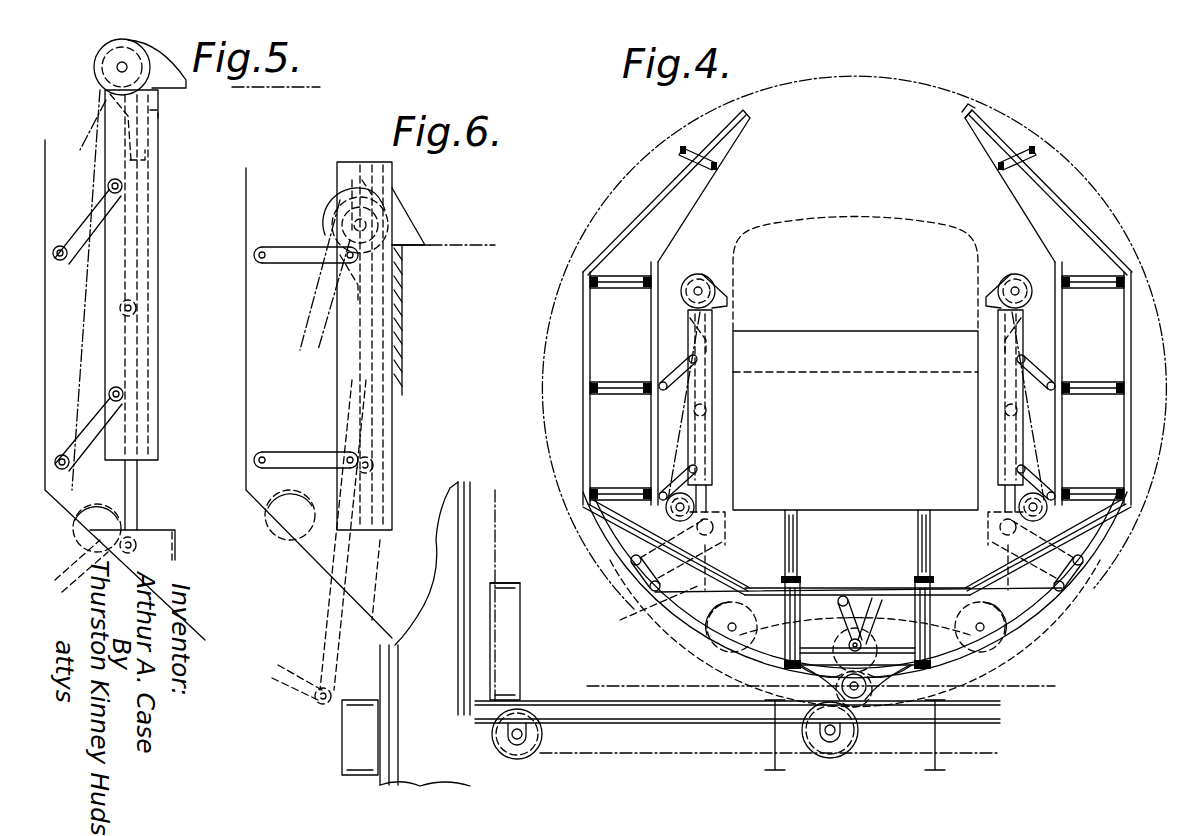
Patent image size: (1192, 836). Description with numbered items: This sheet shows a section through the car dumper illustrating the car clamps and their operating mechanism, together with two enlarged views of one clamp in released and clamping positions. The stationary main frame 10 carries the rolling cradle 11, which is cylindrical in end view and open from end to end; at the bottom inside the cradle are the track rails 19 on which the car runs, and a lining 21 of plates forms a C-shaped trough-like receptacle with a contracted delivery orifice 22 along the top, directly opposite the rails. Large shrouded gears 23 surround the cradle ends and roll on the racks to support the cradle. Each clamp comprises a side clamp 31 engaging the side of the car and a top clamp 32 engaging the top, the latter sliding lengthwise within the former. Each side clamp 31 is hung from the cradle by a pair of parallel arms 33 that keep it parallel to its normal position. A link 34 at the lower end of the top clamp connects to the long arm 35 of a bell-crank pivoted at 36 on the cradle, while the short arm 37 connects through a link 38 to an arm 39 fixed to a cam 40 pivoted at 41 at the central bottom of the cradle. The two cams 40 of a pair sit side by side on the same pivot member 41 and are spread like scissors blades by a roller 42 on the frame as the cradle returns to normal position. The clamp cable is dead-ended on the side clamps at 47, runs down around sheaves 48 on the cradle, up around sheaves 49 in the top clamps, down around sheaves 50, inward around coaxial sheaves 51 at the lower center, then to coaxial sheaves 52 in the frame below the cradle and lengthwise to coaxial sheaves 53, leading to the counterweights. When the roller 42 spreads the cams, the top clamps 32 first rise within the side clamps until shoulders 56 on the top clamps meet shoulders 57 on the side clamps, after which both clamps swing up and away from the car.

In FIG. 4, the main frame 10 is at (455, 540).
In FIG. 4, the cradle 11 is at (1108, 240).
In FIG. 4, the track rails 19 is at (805, 585).
In FIG. 4, the lining 21 is at (660, 284).
In FIG. 4, the contracted delivery orifice 22 is at (962, 118).
In FIG. 4, the shrouded gears 23 is at (1103, 573).
In FIG. 4, the side clamp 31 is at (718, 378).
In FIG. 5, the top clamp 32 is at (172, 91).
In FIG. 4, the top clamp 32 is at (716, 287).
In FIG. 5, the parallel arms 33 is at (88, 262).
In FIG. 6, the parallel arms 33 is at (287, 250).
In FIG. 4, the parallel arms 33 is at (666, 384).
In FIG. 5, the link 34 is at (138, 494).
In FIG. 6, the link 34 is at (333, 621).
In FIG. 4, the link 34 is at (712, 492).
In FIG. 4, the long arm of bell-crank 35 is at (680, 548).
In FIG. 4, the bell-crank pivot 36 is at (636, 556).
In FIG. 4, the short arm of bell-crank 37 is at (638, 586).
In FIG. 4, the arm or link 38 is at (665, 610).
In FIG. 4, the cam arm 39 is at (863, 640).
In FIG. 4, the cam 40 is at (840, 685).
In FIG. 4, the pivot member 41 is at (845, 636).
In FIG. 4, the roller 42 is at (895, 689).
In FIG. 5, the cable dead-end 47 is at (118, 247).
In FIG. 6, the cable dead-end 47 is at (351, 311).
In FIG. 4, the cable dead-end 47 is at (694, 383).
In FIG. 5, the sheaves 48 is at (74, 523).
In FIG. 6, the sheaves 48 is at (270, 535).
In FIG. 4, the sheaves 48 is at (714, 511).
In FIG. 5, the sheaves 49 is at (97, 72).
In FIG. 6, the sheaves 49 is at (343, 208).
In FIG. 4, the sheaves 50 is at (760, 608).
In FIG. 4, the sheaves 51 is at (966, 612).
In FIG. 4, the coaxial sheaves 52 is at (848, 742).
In FIG. 4, the coaxial sheaves 53 is at (522, 750).
In FIG. 5, the shoulders on top clamp 56 is at (145, 118).
In FIG. 6, the shoulders on top clamp 56 is at (380, 272).
In FIG. 5, the shoulders on side clamp 57 is at (131, 92).
In FIG. 6, the shoulders on side clamp 57 is at (372, 188).